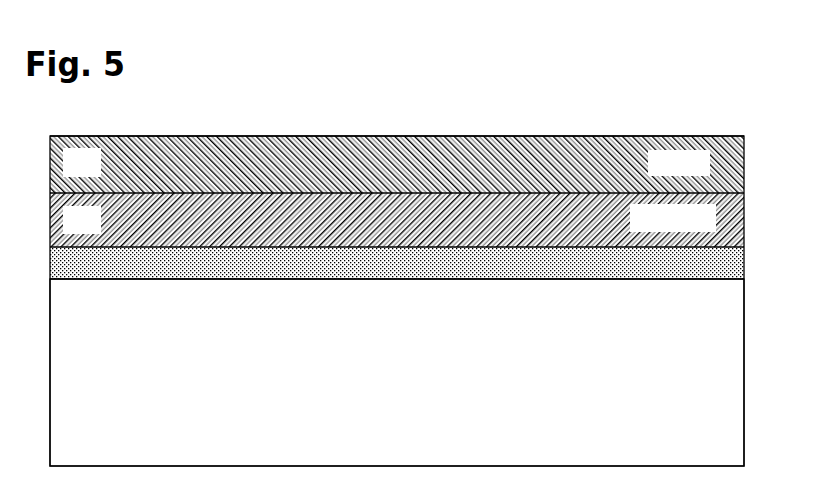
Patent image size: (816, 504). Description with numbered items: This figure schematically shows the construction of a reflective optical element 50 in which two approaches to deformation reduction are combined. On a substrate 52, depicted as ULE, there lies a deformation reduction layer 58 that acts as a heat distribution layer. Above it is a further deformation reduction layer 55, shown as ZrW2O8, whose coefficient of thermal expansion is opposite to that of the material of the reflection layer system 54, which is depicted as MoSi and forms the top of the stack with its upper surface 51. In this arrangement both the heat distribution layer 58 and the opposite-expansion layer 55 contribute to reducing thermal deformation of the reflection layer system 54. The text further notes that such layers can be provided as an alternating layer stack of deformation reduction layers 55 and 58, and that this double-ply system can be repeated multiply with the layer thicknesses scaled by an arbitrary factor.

The multilayer structure 50 is at (487, 64).
The MoSi top layer 51 is at (632, 134).
The ULE substrate 52 is at (126, 413).
The reflection layer system 54 is at (94, 173).
The deformation reduction layer 55 is at (94, 231).
The deformation reduction layer 58 is at (732, 265).